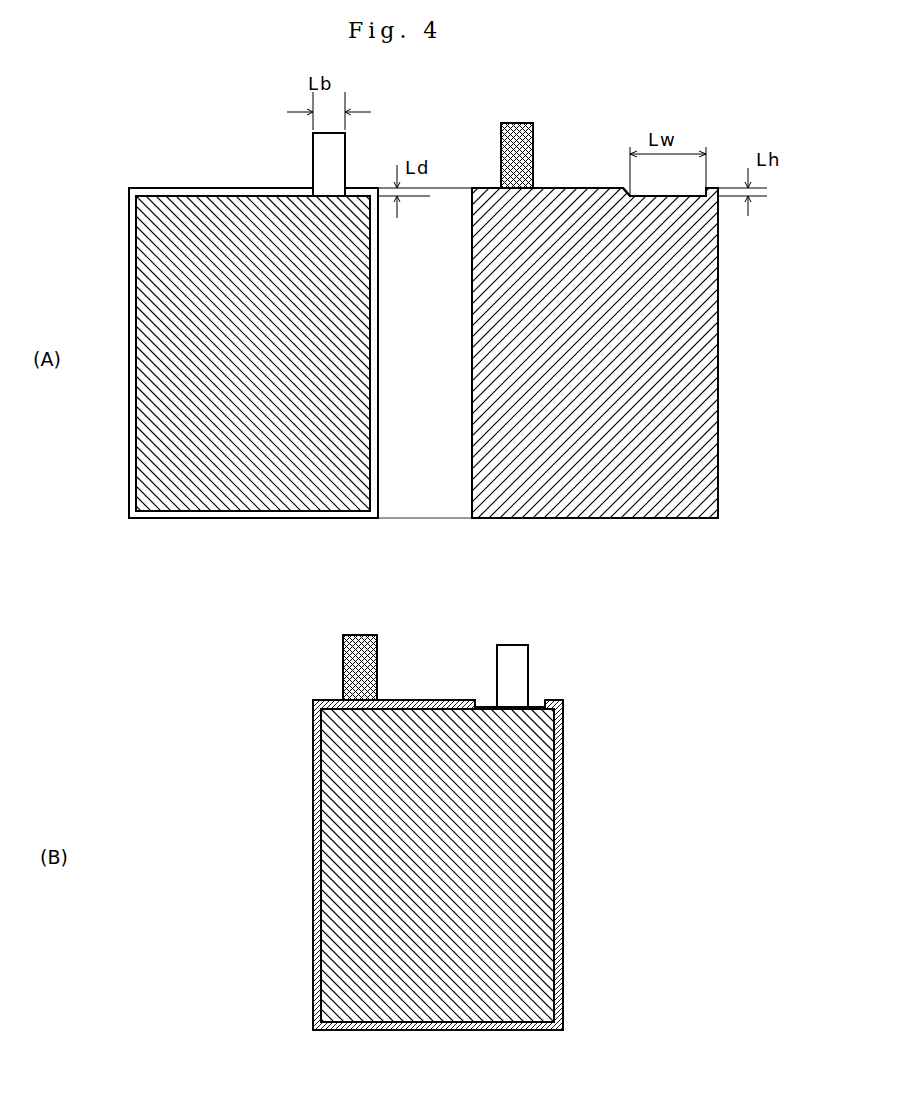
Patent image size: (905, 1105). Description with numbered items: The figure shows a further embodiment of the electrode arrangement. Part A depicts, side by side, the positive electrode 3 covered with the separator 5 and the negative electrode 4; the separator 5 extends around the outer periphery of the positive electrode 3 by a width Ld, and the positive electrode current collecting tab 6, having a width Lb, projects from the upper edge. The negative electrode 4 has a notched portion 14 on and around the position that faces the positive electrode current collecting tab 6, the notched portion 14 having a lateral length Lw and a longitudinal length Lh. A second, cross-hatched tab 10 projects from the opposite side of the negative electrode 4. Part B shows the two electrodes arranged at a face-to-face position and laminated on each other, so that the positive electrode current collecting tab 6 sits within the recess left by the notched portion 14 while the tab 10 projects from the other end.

The positive electrode 3 is at (155, 233).
The negative electrode 4 is at (697, 303).
The separator 5 is at (185, 191).
The positive electrode current collecting tab 6 is at (317, 160).
The positive electrode lead tab 10 is at (533, 132).
The notched portion 14 is at (677, 190).